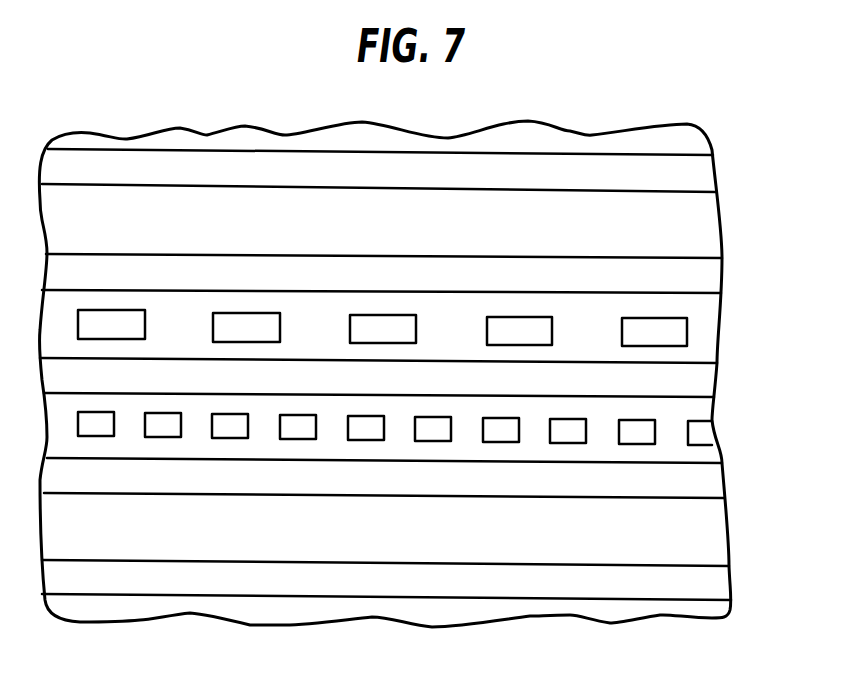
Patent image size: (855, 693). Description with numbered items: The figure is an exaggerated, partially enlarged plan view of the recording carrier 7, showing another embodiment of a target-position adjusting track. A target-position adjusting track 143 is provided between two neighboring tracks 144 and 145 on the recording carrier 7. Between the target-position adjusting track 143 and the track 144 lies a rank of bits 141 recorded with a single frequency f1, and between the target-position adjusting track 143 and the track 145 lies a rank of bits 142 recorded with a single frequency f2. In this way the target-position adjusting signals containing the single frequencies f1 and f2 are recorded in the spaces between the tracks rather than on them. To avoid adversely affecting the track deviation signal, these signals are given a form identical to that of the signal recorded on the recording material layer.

The recording carrier 7 is at (597, 134).
The rank of bits having single frequency f1 141 is at (687, 334).
The rank of bits having single frequency f2 142 is at (713, 428).
The target-position adjusting track 143 is at (700, 373).
The track 144 is at (700, 277).
The track 145 is at (700, 482).